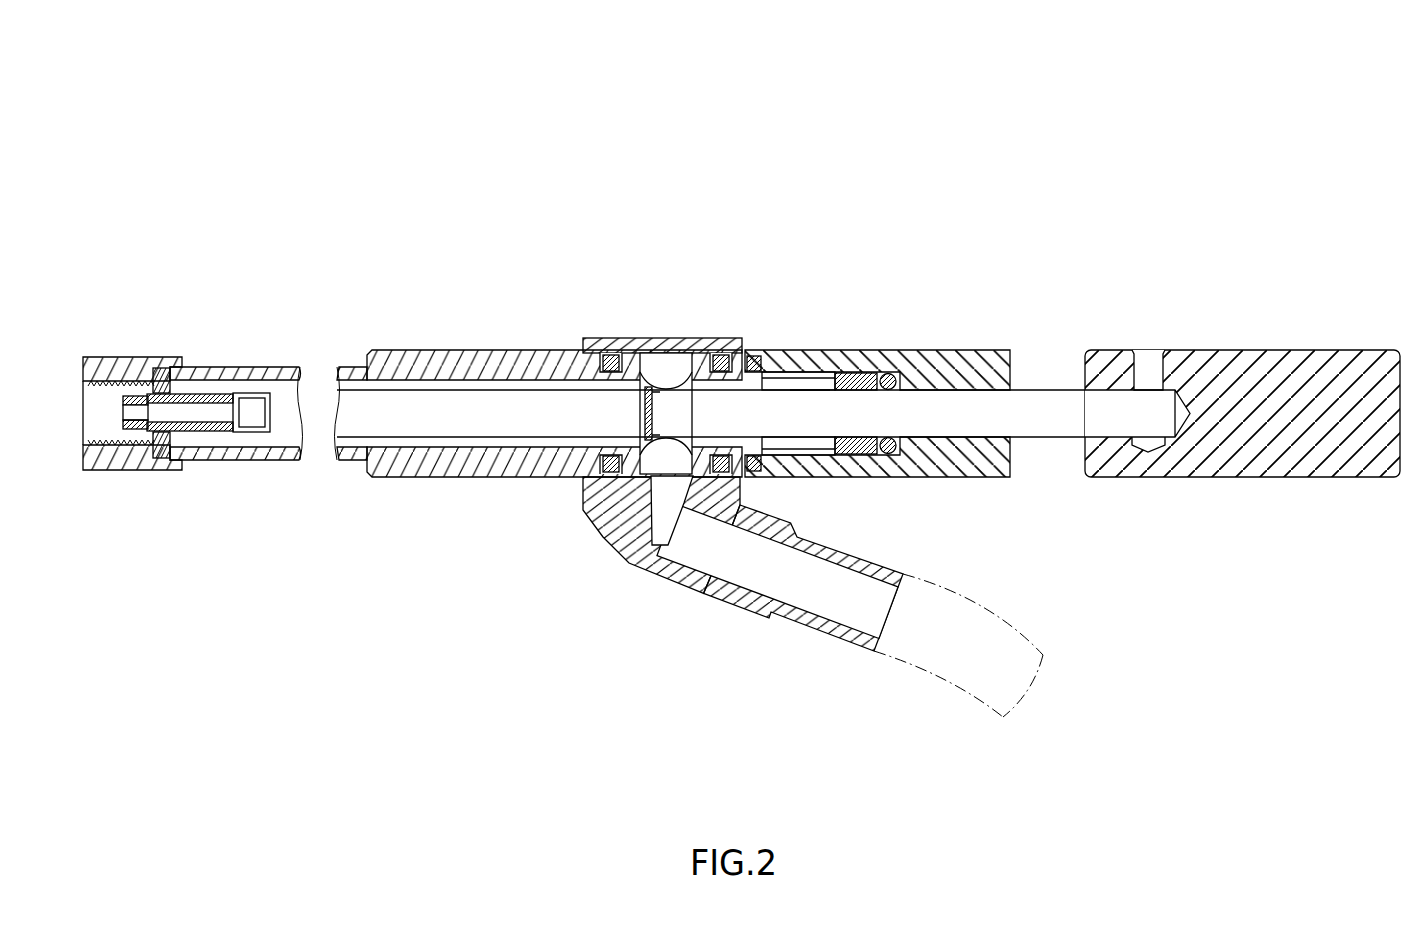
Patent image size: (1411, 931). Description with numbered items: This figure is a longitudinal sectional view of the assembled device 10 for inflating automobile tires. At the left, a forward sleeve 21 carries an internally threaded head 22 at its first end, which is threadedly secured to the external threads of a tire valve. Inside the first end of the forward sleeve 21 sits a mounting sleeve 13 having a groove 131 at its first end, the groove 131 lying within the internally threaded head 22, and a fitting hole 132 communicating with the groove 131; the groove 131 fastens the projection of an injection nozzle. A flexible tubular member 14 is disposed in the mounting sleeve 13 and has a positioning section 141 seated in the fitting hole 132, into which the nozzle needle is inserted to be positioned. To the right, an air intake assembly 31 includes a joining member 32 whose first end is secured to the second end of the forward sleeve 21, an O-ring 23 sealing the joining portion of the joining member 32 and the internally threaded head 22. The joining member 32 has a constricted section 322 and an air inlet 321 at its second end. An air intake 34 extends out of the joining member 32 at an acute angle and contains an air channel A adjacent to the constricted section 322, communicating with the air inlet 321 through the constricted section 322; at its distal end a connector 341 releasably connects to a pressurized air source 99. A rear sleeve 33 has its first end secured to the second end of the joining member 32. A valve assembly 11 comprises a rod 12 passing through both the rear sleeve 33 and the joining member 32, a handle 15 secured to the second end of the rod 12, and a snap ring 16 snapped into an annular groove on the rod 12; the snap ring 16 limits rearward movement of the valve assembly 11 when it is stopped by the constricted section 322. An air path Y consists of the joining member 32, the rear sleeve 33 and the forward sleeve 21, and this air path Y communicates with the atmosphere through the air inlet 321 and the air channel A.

The device 10 is at (718, 393).
The valve assembly 11 is at (868, 385).
The rod 12 is at (1055, 425).
The mounting sleeve 13 is at (246, 393).
The groove 131 is at (130, 423).
The fitting hole 132 is at (130, 413).
The flexible tubular member 14 is at (205, 394).
The positioning section 141 is at (147, 398).
The handle 15 is at (1318, 388).
The snap ring 16 is at (645, 413).
The forward sleeve 21 is at (255, 452).
The internally threaded head 22 is at (105, 357).
The O-ring 23 is at (157, 435).
The air intake assembly 31 is at (703, 296).
The joining member 32 is at (424, 358).
The air inlet 321 is at (746, 372).
The constricted section 322 is at (666, 382).
The rear sleeve 33 is at (958, 368).
The air intake 34 is at (602, 522).
The connector 341 is at (742, 607).
The pressurized air source 99 is at (1008, 675).
The air channel A is at (668, 488).
The air path Y is at (807, 390).